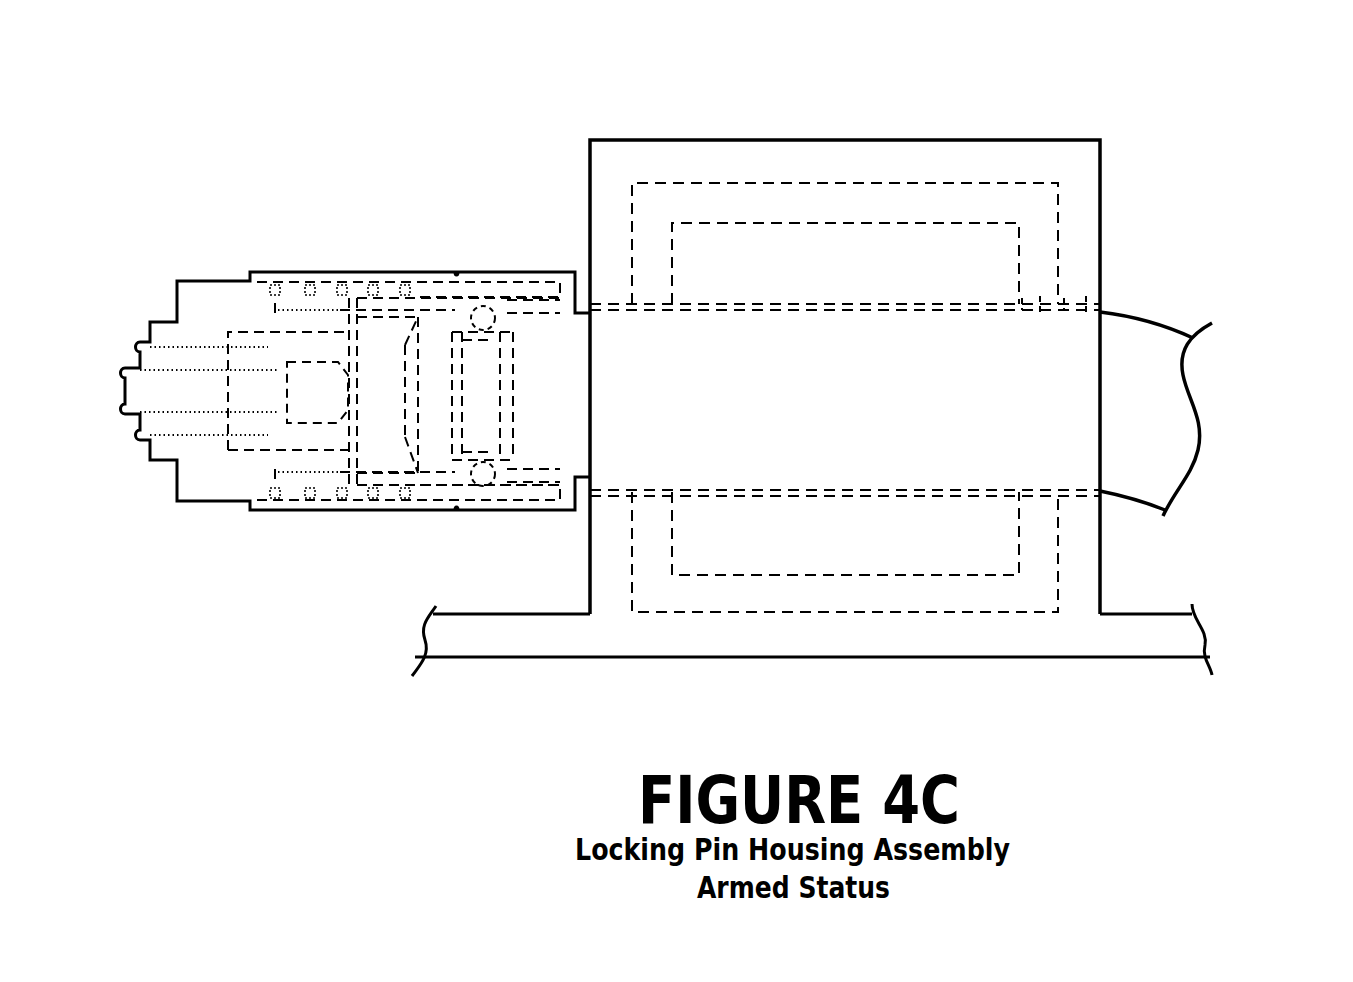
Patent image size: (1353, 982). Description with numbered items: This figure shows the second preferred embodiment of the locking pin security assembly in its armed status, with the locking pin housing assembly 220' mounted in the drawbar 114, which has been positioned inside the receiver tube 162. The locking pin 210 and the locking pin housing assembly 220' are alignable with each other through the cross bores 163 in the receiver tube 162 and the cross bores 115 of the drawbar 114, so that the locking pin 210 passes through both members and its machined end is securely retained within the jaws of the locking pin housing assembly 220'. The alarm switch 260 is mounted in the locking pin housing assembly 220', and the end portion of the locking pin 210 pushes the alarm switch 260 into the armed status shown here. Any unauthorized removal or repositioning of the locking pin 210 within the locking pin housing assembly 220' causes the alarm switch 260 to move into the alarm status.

The receiver tube 162 is at (776, 165).
The drawbar 114 is at (828, 207).
The cross bores 115 is at (1040, 305).
The cross bores 163 is at (1085, 305).
The locking pin 210 is at (1127, 338).
The locking pin housing assembly 220' is at (356, 305).
The alarm switch 260 is at (327, 403).